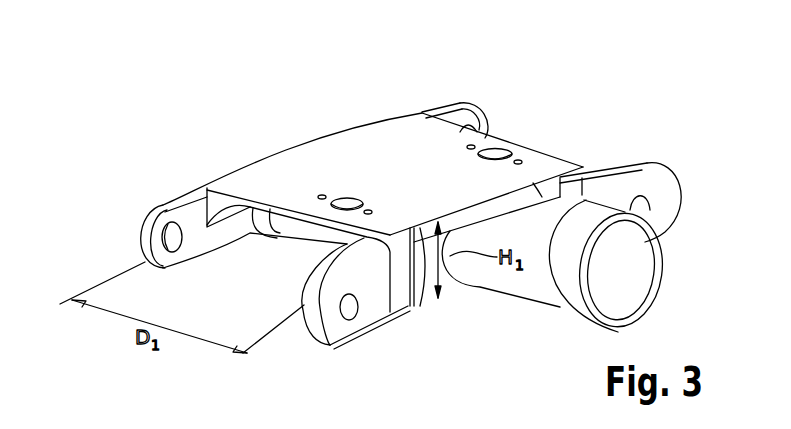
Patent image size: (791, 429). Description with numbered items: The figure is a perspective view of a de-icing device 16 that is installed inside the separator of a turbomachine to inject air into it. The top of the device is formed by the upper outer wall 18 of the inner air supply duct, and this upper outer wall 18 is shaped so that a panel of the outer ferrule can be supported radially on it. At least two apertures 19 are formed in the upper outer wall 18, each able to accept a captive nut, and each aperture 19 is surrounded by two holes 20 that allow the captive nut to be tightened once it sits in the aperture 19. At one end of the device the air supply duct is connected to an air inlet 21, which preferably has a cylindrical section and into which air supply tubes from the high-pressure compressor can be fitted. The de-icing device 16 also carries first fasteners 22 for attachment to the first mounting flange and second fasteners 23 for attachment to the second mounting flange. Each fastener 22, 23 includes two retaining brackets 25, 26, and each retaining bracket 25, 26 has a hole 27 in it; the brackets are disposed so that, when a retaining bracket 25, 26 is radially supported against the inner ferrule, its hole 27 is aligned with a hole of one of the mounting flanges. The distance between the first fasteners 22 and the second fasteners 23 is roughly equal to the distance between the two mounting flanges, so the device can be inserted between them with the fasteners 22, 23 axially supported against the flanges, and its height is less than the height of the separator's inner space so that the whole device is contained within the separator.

The de-icing device 16 is at (376, 202).
The upper outer wall 18 is at (373, 147).
The apertures 19 is at (347, 203).
The holes 20 is at (475, 143).
The air inlet 21 is at (594, 218).
The first fasteners 22 is at (183, 198).
The second fasteners 23 is at (378, 297).
The retaining bracket 25 is at (197, 247).
The retaining bracket 26 is at (320, 312).
The hole 27 is at (163, 238).